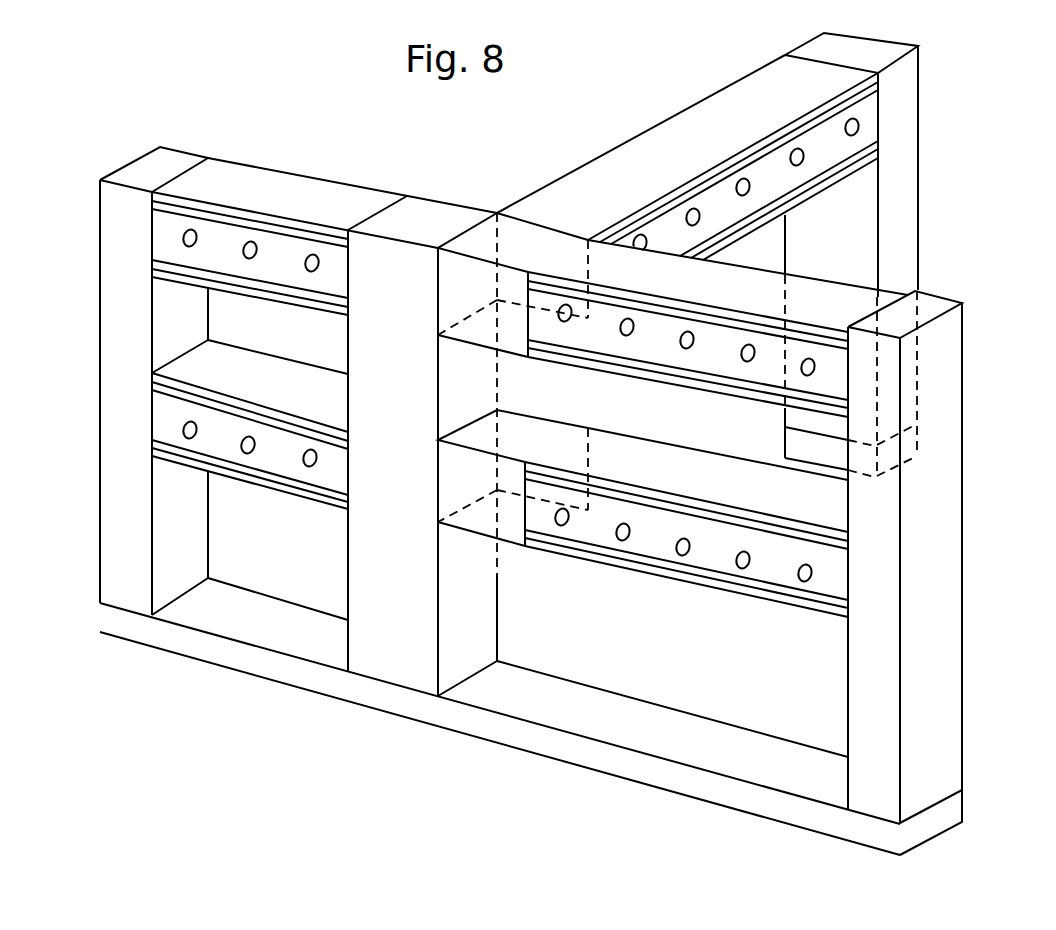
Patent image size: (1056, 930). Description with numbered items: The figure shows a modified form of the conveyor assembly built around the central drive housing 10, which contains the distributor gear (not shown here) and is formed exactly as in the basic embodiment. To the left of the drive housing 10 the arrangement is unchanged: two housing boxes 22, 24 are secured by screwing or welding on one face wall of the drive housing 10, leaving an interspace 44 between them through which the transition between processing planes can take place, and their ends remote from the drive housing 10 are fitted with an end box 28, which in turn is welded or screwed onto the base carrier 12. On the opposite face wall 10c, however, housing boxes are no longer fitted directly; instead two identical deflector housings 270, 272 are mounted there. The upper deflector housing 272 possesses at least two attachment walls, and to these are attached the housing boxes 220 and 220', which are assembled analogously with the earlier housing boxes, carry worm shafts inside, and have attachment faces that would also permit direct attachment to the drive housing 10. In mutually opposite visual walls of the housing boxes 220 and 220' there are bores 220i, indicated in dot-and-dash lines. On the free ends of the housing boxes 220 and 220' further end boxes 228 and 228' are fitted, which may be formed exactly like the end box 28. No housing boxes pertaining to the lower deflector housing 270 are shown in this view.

The end box 28 is at (134, 172).
The housing box 24 is at (310, 194).
The interspace 44 is at (250, 314).
The housing box 22 is at (272, 478).
The drive housing 10 is at (371, 652).
The face wall 10c is at (465, 662).
The deflector housing 272 is at (518, 357).
The deflector housing 270 is at (515, 556).
The housing box 220 is at (718, 340).
The bores 220i is at (626, 336).
The housing box 220' is at (687, 157).
The end box 228' is at (902, 255).
The end box 228 is at (951, 557).
The base carrier 12 is at (571, 750).